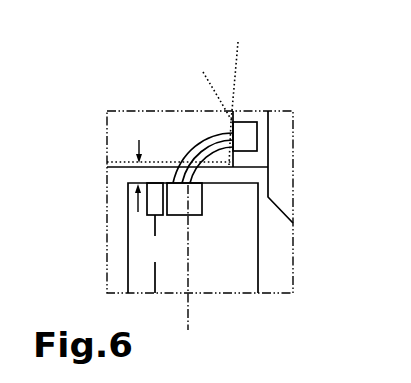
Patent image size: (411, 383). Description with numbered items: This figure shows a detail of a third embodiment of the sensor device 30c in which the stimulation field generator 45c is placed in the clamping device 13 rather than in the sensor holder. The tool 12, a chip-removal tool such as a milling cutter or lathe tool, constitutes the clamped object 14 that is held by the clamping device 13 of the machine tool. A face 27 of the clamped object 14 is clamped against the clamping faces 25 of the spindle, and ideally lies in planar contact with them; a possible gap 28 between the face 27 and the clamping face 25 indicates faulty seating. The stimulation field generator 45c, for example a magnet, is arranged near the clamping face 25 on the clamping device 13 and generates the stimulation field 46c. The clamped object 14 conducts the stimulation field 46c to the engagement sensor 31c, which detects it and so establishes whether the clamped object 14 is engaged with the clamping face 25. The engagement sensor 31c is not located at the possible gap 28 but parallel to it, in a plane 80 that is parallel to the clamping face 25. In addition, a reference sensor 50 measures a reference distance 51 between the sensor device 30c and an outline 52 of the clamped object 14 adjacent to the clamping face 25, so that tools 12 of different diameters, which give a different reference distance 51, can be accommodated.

The tool 12 is at (107, 162).
The clamping device 13 is at (291, 151).
The clamped object 14 is at (127, 110).
The clamping faces 25 is at (233, 120).
The face of the clamped object 27 is at (205, 85).
The gap 28 is at (243, 93).
The sensor device 30c is at (110, 250).
The engagement sensor 31c is at (199, 212).
The stimulation field generator 45c is at (256, 130).
The stimulation field 46c is at (190, 146).
The reference sensor 50 is at (151, 217).
The reference distance 51 is at (130, 173).
The outline of the clamped object 52 is at (163, 168).
The plane 80 is at (190, 298).